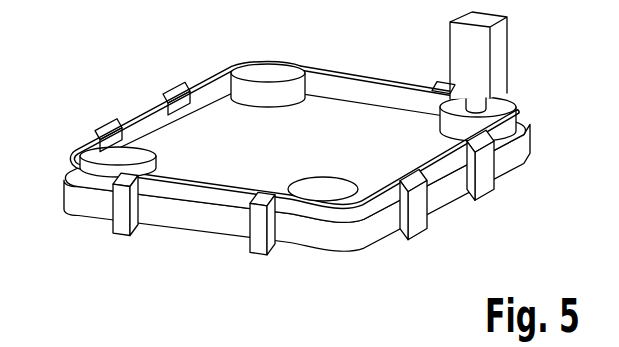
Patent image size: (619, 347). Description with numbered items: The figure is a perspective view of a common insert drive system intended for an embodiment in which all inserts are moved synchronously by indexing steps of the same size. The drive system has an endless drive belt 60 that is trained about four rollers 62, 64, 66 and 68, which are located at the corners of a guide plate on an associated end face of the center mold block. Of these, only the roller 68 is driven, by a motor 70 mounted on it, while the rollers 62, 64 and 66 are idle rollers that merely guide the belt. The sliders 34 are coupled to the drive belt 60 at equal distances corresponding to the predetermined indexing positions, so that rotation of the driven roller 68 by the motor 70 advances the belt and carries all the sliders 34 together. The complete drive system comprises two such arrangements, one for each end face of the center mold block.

The slider 34 is at (427, 223).
The endless drive belt 60 is at (383, 92).
The roller 62 is at (263, 77).
The roller 64 is at (72, 176).
The roller 66 is at (322, 188).
The roller 68 is at (502, 113).
The motor 70 is at (500, 35).